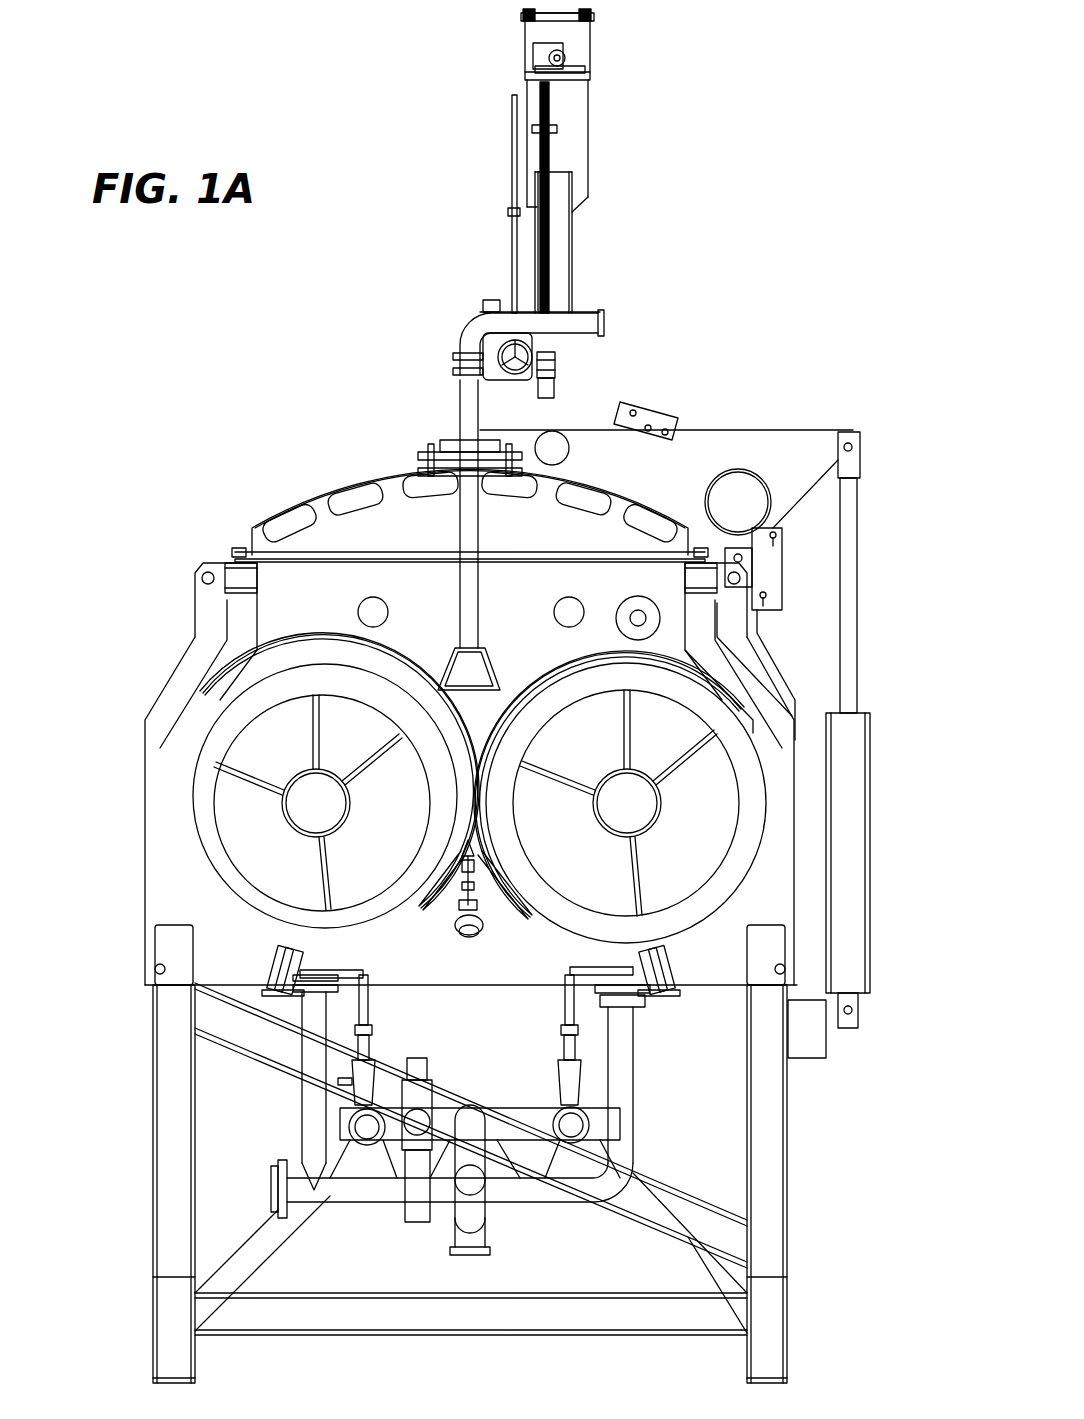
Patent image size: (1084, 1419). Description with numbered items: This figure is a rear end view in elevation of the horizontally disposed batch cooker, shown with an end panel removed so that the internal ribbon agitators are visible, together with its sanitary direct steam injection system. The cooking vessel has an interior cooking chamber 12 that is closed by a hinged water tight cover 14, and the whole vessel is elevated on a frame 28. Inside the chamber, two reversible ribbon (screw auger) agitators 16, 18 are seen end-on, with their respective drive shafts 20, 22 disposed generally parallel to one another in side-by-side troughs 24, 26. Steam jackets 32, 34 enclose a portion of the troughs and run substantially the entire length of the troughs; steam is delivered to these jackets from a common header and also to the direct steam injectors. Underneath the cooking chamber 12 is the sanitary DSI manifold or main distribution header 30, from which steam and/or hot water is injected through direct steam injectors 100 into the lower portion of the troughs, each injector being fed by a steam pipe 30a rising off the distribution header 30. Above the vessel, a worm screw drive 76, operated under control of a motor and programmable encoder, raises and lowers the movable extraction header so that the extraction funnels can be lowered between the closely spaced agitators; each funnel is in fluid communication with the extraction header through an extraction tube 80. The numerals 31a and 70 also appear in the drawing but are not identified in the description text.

The interior cooking chamber 12 is at (275, 640).
The hinged water tight cover 14 is at (350, 485).
The reversible ribbon agitator 16 is at (235, 700).
The reversible ribbon agitator 18 is at (695, 705).
The drive shaft 20 is at (305, 805).
The drive shaft 22 is at (635, 805).
The trough 24 is at (205, 885).
The trough 26 is at (765, 865).
The frame 28 is at (172, 1158).
The direct steam injection manifold 30 is at (512, 1070).
The steam pipe 30a is at (578, 1022).
The first drain valve 31a is at (360, 1010).
The steam jacket 32 is at (178, 770).
The steam jacket 34 is at (770, 820).
The feed pipe 70 is at (438, 660).
The worm screw drive 76 is at (565, 120).
The extraction tube 80 is at (462, 338).
The direct steam injector 100 is at (282, 960).